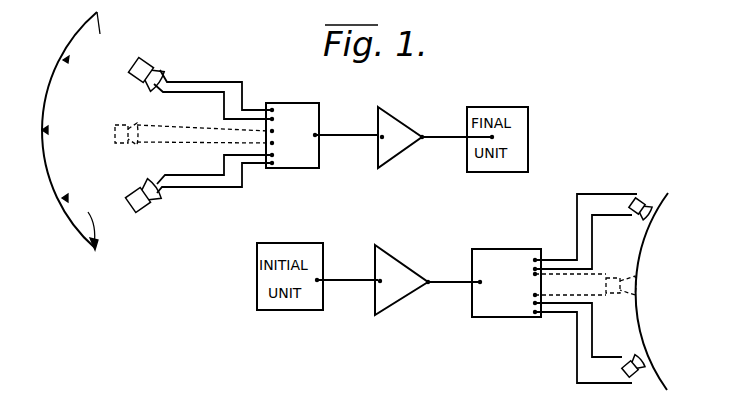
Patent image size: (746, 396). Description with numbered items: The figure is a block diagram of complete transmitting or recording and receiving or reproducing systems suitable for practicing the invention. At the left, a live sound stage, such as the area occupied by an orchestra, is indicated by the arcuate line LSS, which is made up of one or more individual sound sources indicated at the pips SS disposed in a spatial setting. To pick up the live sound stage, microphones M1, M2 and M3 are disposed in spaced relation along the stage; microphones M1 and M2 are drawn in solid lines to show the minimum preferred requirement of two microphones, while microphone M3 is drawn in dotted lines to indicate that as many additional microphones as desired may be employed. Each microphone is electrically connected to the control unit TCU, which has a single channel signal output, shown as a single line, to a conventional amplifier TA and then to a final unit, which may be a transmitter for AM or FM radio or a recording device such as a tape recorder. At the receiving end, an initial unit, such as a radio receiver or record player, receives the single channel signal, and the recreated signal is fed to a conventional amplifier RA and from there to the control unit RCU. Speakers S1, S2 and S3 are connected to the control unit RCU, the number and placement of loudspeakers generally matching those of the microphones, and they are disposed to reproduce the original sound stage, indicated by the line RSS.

The live sound stage LSS is at (67, 218).
The sound sources SS is at (65, 58).
The microphone M1 is at (160, 64).
The microphone M2 is at (142, 208).
The microphone M3 is at (137, 125).
The control unit TCU is at (296, 115).
The amplifier TA is at (388, 118).
The amplifier RA is at (382, 300).
The control unit RCU is at (500, 306).
The recreated sound stage RSS is at (637, 313).
The speaker S1 is at (645, 212).
The speaker S2 is at (645, 366).
The speaker S3 is at (637, 285).